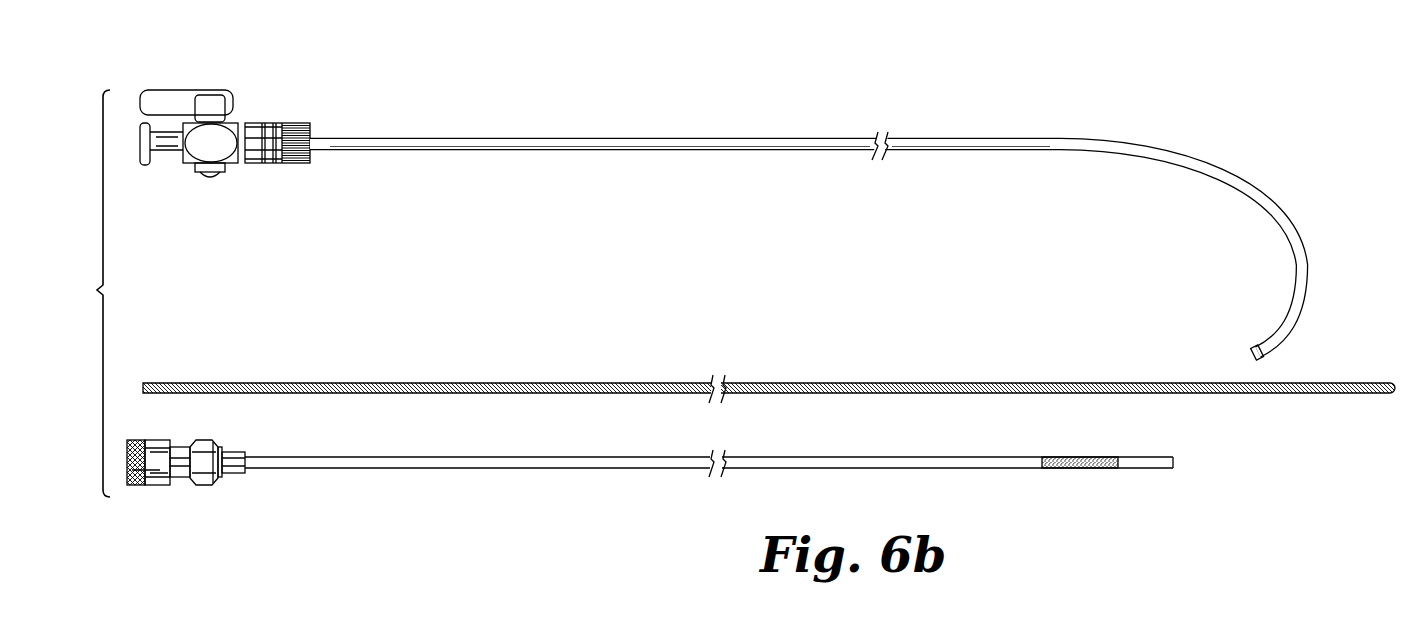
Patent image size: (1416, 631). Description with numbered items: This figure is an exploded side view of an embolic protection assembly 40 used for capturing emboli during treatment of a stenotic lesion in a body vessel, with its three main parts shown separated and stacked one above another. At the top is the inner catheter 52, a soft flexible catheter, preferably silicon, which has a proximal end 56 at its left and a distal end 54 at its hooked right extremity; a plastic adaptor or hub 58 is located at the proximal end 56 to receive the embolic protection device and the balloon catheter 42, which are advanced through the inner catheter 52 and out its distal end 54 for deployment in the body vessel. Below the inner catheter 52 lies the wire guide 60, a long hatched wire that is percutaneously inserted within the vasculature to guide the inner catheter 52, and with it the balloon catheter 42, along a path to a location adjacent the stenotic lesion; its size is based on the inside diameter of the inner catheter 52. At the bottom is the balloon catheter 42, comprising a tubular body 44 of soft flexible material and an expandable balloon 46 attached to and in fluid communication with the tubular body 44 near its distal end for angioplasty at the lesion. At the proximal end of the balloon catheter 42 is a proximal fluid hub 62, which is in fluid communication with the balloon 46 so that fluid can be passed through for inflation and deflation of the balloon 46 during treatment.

The embolic protection assembly 40 is at (279, 67).
The balloon catheter 42 is at (407, 460).
The tubular body 44 is at (313, 462).
The expandable balloon 46 is at (1080, 462).
The inner catheter 52 is at (727, 137).
The distal end 54 is at (1247, 358).
The proximal end 56 is at (313, 130).
The plastic adaptor or hub 58 is at (218, 150).
The wire guide 60 is at (582, 382).
The proximal fluid hub 62 is at (205, 468).